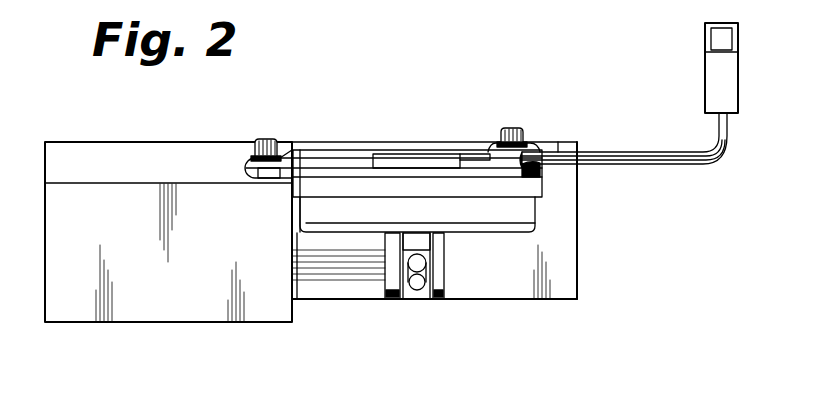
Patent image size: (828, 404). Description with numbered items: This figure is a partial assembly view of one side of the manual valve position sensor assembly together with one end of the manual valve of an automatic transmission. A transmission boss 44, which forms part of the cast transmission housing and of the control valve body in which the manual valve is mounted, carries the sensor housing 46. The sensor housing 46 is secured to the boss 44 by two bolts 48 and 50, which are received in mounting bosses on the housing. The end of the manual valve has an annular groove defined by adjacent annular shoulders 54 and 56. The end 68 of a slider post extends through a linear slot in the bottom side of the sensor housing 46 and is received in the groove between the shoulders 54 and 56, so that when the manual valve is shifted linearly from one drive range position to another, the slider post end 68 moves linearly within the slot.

The transmission boss 44 is at (135, 325).
The sensor housing 46 is at (372, 186).
The bolt 48 is at (272, 157).
The bolt 50 is at (520, 140).
The annular shoulder 54 is at (438, 300).
The annular shoulder 56 is at (388, 300).
The slider post end 68 is at (420, 236).